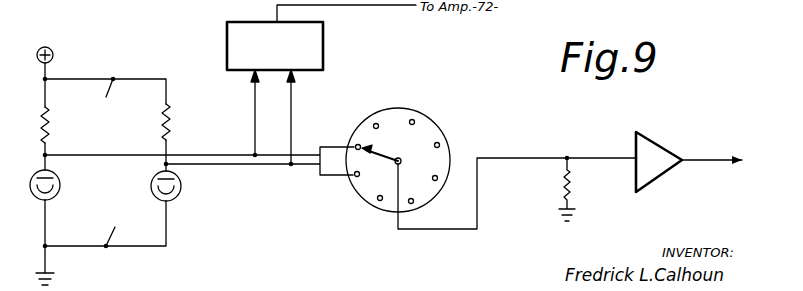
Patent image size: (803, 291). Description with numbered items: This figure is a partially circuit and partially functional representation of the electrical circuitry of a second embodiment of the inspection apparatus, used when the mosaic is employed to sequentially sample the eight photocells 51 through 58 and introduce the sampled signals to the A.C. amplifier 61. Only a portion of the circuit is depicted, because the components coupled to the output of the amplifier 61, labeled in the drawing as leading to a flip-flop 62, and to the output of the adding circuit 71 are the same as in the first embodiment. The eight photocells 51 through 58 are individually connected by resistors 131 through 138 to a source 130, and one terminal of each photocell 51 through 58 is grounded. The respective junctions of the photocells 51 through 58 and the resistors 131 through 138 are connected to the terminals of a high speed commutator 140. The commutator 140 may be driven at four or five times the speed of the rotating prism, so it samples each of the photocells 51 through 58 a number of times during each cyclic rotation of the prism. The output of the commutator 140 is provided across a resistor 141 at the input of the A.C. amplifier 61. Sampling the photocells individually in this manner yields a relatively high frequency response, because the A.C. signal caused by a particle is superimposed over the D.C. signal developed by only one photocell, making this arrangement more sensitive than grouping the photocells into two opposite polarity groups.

The source 130 is at (54, 58).
The resistor 131 is at (50, 128).
The resistor 138 is at (171, 118).
The photocell 51 is at (60, 186).
The photocell 58 is at (181, 190).
The adding circuit 71 is at (323, 40).
The high speed commutator 140 is at (440, 125).
The resistor 141 is at (563, 190).
The A.C. amplifier 61 is at (654, 136).
The flip-flop (to F/F) 62 is at (746, 136).